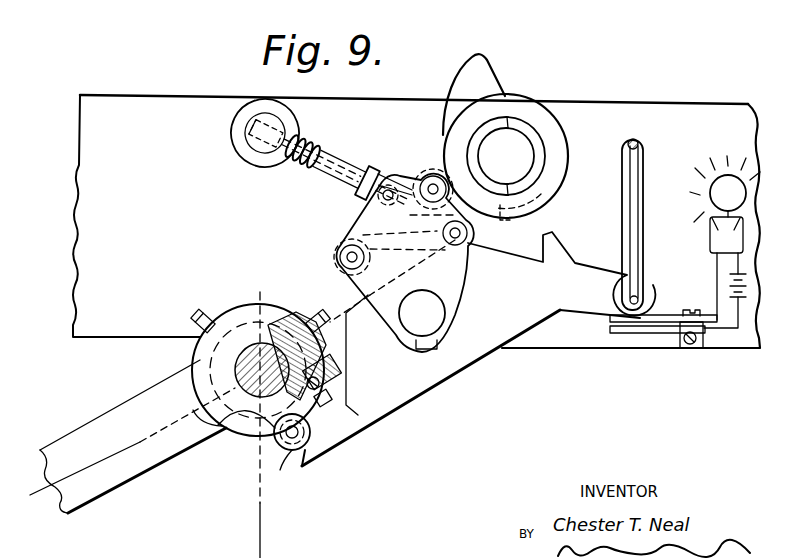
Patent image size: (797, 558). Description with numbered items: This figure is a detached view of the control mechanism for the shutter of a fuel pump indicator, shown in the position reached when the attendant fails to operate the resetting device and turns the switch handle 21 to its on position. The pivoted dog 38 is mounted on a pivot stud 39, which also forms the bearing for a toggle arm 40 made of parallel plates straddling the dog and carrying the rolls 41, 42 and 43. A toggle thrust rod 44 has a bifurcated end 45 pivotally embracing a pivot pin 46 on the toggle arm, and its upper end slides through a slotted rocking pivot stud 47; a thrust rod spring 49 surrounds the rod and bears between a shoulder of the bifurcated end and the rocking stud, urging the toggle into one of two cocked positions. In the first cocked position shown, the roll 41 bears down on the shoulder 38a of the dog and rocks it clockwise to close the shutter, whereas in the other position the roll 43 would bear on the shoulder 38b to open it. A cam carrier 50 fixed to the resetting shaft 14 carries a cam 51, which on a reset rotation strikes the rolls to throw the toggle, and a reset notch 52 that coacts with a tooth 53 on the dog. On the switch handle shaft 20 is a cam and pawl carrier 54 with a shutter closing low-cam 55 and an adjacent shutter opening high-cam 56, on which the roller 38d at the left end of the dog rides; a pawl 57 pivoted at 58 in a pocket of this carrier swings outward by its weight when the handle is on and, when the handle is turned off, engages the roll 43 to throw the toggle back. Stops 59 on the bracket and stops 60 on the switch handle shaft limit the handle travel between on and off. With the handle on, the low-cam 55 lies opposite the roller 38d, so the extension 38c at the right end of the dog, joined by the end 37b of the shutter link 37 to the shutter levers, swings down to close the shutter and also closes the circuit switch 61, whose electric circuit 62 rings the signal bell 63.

The resetting shaft 14 is at (506, 156).
The switch handle shaft 20 is at (260, 303).
The switch handle 21 is at (143, 402).
The shutter link 37 is at (643, 150).
The other end of shutter link 37b is at (647, 292).
The pivoted dog 38 is at (397, 409).
The shoulder of dog 38a is at (463, 273).
The shoulder of dog 38b is at (353, 312).
The extension of dog 38c is at (590, 303).
The roller of dog 38d is at (293, 451).
The pivot stud 39 is at (437, 318).
The toggle arm 40 is at (417, 343).
The roll 41 is at (442, 232).
The roll 42 is at (432, 179).
The roll 43 is at (340, 250).
The toggle thrust rod 44 is at (343, 166).
The bifurcated end 45 is at (407, 181).
The pivot pin 46 is at (378, 203).
The rocking pivot stud 47 is at (255, 143).
The thrust rod spring 49 is at (295, 166).
The cam carrier 50 is at (560, 147).
The cam 51 is at (487, 70).
The reset notch 52 is at (505, 220).
The tooth 53 is at (562, 243).
The cam and pawl carrier 54 is at (194, 361).
The shutter closing low-cam 55 is at (217, 423).
The shutter opening high-cam 56 is at (243, 438).
The pawl 57 is at (333, 368).
The pawl pivot 58 is at (328, 388).
The stops 59 is at (210, 313).
The stops 60 is at (322, 407).
The circuit switch 61 is at (653, 330).
The electric circuit 62 is at (717, 267).
The signal bell 63 is at (727, 180).